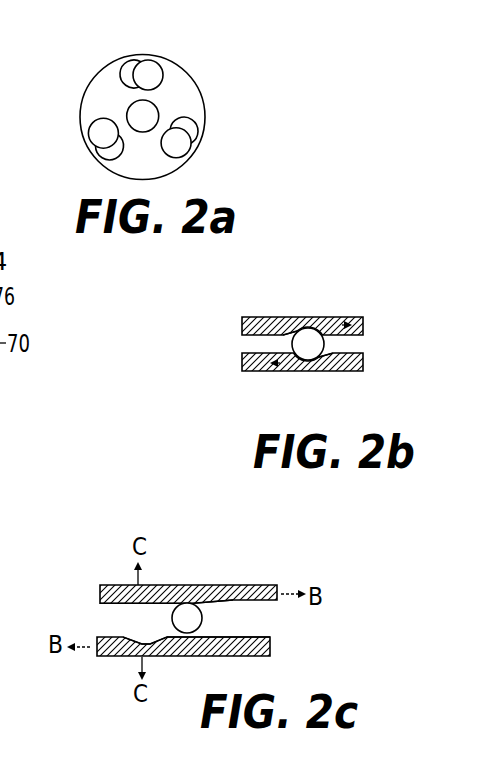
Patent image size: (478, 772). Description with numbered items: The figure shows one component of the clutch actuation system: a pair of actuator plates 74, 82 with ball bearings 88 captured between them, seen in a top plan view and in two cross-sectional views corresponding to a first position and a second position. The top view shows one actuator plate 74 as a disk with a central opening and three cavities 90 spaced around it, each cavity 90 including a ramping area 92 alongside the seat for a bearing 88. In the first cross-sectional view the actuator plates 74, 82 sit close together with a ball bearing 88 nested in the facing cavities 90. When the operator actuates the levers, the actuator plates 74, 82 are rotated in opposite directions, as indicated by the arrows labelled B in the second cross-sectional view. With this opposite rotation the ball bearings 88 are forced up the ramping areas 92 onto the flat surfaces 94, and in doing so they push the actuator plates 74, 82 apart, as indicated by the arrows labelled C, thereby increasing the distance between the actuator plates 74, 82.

In FIG. 2a, the actuator plate 74 is at (188, 88).
In FIG. 2b, the actuator plate 74 is at (363, 366).
In FIG. 2c, the actuator plate 74 is at (108, 657).
In FIG. 2b, the actuator plate 82 is at (363, 323).
In FIG. 2c, the actuator plate 82 is at (203, 585).
In FIG. 2b, the ball bearing 88 is at (318, 342).
In FIG. 2c, the ball bearing 88 is at (195, 630).
In FIG. 2a, the cavity 90 is at (152, 70).
In FIG. 2a, the ramping area 92 is at (124, 76).
In FIG. 2b, the ramping area 92 is at (291, 339).
In FIG. 2c, the ramping area 92 is at (153, 642).
In FIG. 2c, the flat surface 94 is at (112, 604).